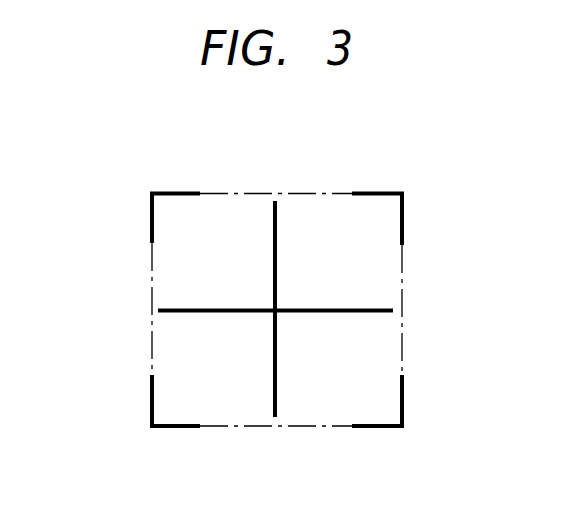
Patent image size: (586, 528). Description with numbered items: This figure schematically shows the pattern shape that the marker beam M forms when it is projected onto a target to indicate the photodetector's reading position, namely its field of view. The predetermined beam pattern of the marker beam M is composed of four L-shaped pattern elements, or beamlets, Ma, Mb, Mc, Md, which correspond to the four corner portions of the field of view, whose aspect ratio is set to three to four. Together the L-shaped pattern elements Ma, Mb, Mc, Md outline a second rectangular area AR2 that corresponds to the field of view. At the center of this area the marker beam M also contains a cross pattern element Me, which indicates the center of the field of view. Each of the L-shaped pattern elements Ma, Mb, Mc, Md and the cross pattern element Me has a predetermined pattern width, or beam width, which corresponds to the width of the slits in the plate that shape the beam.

The marker beam M is at (280, 311).
The L-shaped pattern element Ma is at (175, 193).
The L-shaped pattern element Mb is at (378, 193).
The L-shaped pattern element Mc is at (382, 428).
The L-shaped pattern element Md is at (171, 428).
The cross pattern element Me is at (338, 309).
The second rectangular area AR2 is at (402, 302).